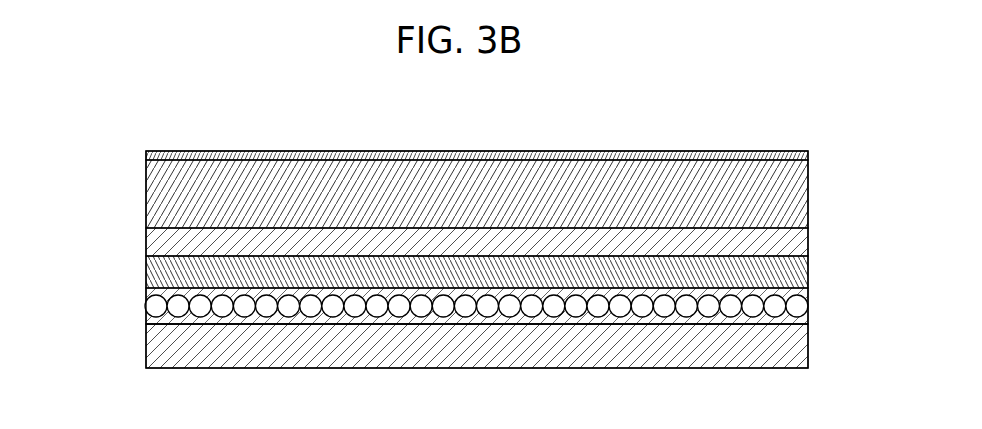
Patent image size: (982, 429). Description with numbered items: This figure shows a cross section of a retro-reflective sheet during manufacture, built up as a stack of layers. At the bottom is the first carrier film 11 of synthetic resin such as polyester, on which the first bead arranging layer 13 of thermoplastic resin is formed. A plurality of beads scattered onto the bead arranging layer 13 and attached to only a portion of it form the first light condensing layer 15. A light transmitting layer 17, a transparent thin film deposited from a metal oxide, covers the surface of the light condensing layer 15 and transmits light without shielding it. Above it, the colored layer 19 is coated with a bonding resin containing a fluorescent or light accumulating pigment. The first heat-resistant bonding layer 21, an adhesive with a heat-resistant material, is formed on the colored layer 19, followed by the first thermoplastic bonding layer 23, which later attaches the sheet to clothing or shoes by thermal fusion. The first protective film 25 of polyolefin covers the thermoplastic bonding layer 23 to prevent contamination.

The first carrier film 11 is at (802, 356).
The first bead arranging layer 13 is at (809, 323).
The first light condensing layer 15 is at (809, 302).
The light transmitting layer 17 is at (146, 288).
The colored layer 19 is at (146, 258).
The first heat-resistant bonding layer 21 is at (146, 230).
The first thermoplastic bonding layer 23 is at (800, 171).
The first protective film 25 is at (239, 151).